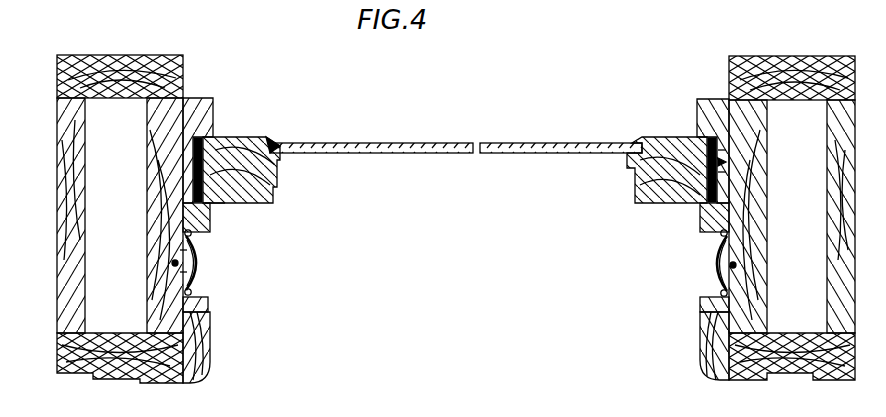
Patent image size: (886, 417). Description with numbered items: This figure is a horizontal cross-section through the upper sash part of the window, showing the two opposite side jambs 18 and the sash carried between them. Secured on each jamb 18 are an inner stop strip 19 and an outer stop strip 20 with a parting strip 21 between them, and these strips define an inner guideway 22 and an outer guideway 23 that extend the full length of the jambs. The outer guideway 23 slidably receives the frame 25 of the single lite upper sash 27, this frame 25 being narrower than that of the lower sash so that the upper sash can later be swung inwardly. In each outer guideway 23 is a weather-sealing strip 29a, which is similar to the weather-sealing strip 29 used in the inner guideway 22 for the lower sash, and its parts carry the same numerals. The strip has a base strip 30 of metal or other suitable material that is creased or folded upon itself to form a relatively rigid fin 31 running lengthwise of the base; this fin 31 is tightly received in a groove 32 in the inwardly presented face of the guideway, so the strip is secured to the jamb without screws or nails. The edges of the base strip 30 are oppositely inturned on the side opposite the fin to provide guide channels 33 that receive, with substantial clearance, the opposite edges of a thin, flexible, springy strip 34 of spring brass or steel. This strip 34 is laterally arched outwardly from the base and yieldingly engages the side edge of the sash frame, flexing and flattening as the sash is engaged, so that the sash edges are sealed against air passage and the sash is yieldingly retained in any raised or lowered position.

The side jamb 18 is at (159, 338).
The inner stop strip 19 is at (210, 342).
The outer stop strip 20 is at (213, 104).
The parting strip 21 is at (212, 224).
The inner guideway 22 is at (210, 299).
The outer guideway 23 is at (206, 138).
The upper sash frame 25 is at (272, 142).
The upper sash 27 is at (527, 141).
The weather-sealing strip 29 is at (198, 262).
The weather-sealing strip 29a is at (216, 205).
The base strip 30 is at (183, 250).
The fin 31 is at (183, 272).
The groove 32 is at (172, 263).
The guide channel 33 is at (192, 235).
The arched strip 34 is at (197, 270).